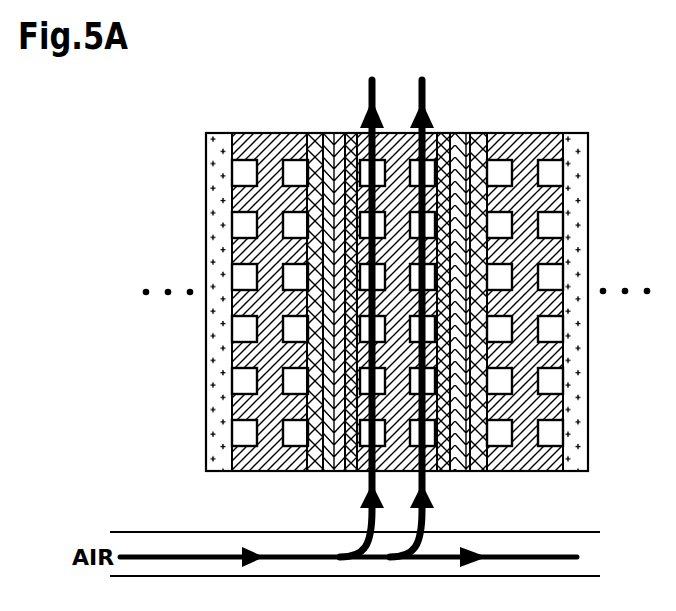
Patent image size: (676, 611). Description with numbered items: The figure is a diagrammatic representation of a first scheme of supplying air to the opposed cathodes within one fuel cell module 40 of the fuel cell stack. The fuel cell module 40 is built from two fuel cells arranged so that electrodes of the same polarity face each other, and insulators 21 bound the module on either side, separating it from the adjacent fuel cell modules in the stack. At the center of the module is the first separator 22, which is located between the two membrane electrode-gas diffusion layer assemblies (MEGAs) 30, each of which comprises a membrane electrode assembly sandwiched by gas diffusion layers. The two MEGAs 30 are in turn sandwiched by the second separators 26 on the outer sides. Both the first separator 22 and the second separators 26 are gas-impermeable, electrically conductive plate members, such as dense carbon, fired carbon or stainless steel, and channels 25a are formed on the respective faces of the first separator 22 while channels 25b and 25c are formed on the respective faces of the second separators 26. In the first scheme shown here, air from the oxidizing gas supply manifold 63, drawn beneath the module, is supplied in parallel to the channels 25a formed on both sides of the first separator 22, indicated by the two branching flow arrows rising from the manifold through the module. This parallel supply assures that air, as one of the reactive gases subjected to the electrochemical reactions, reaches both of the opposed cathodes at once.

The fuel cell module 40 is at (291, 64).
The insulator 21 is at (213, 133).
The second separator 26 is at (248, 133).
The first separator 22 is at (393, 133).
The membrane electrode-gas diffusion layer assembly (MEGA) 30 is at (393, 297).
The channels 25a is at (345, 437).
The channels 25b is at (297, 437).
The channels 25c is at (244, 437).
The oxidizing gas supply manifold 63 is at (143, 532).